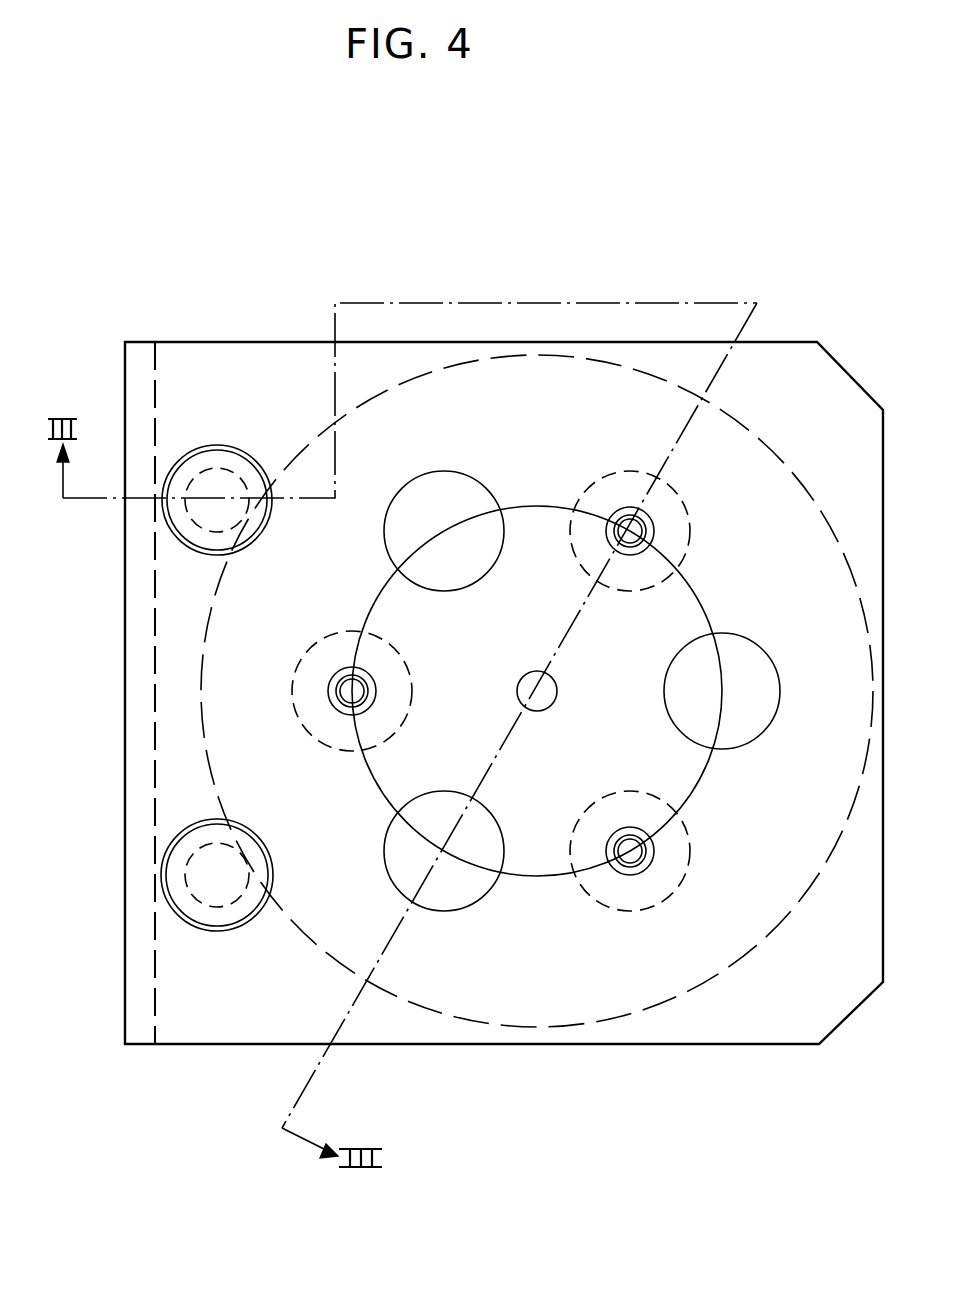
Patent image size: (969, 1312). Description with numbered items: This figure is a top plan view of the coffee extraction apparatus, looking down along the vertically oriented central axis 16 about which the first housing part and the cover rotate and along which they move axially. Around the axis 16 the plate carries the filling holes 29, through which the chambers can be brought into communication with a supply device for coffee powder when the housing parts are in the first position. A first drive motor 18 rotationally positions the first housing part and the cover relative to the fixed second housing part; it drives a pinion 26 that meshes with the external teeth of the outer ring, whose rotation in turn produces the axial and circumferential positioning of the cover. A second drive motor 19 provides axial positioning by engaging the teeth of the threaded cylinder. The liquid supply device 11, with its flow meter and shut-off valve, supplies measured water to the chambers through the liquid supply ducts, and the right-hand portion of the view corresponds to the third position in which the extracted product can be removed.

The liquid supply device 11 is at (640, 530).
The central axis 16 is at (548, 690).
The first drive motor 18 is at (238, 475).
The second drive motor 19 is at (226, 916).
The pinion 26 is at (211, 482).
The filling holes 29 is at (470, 481).